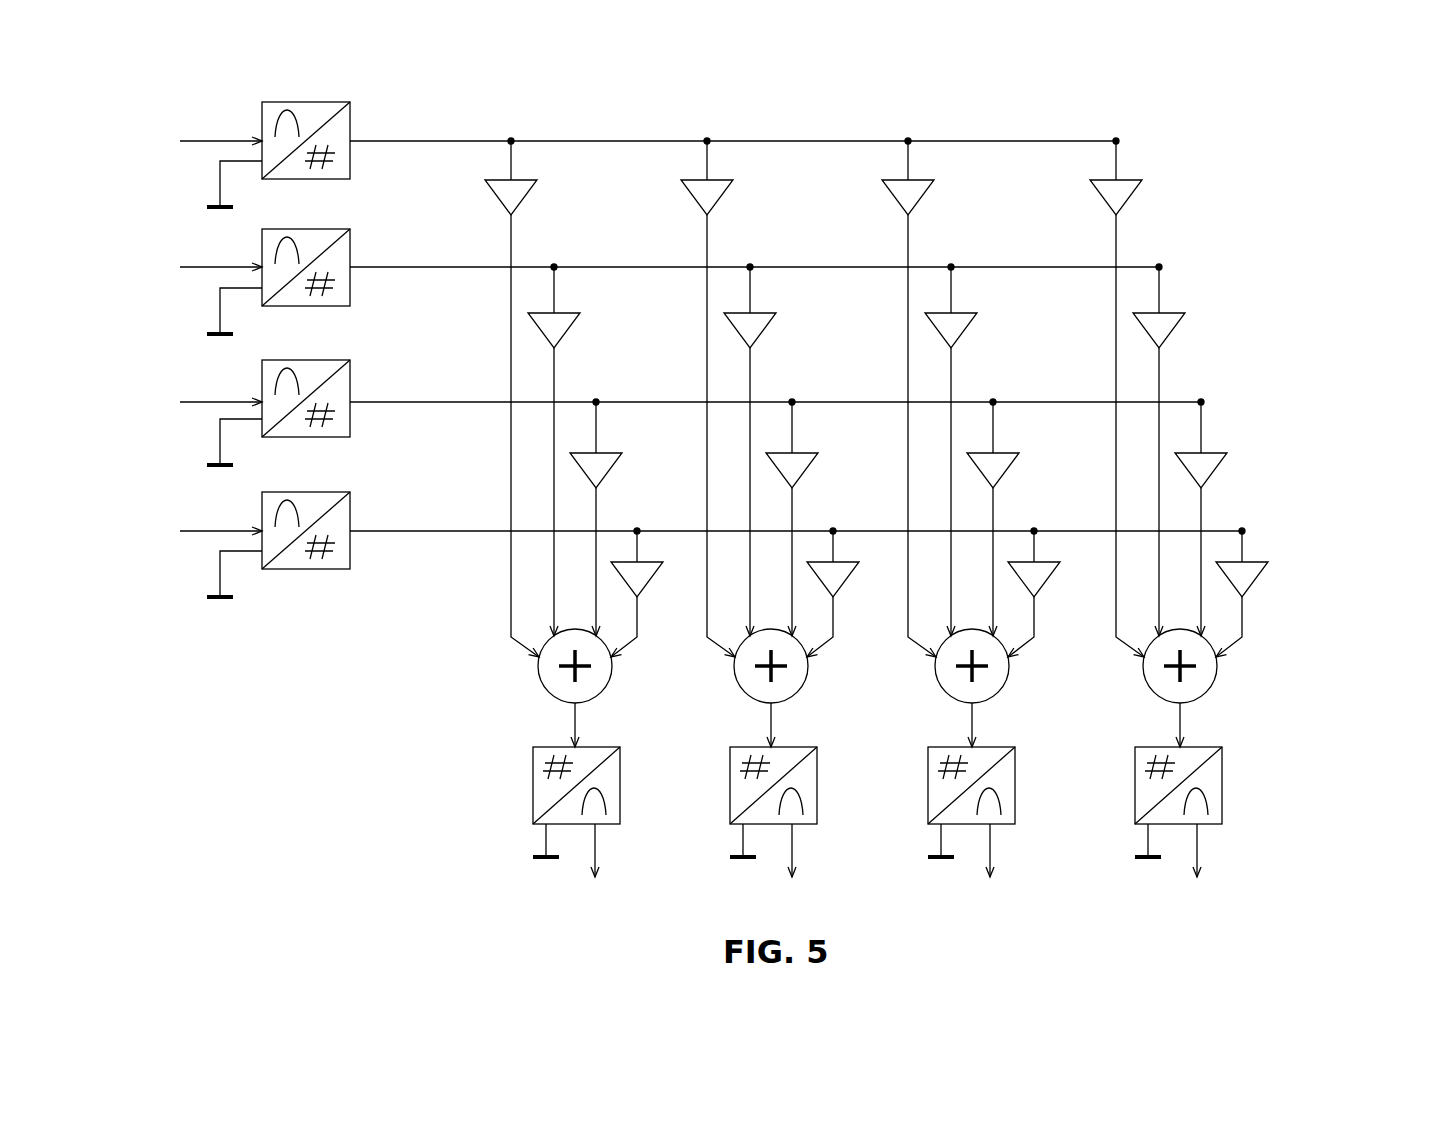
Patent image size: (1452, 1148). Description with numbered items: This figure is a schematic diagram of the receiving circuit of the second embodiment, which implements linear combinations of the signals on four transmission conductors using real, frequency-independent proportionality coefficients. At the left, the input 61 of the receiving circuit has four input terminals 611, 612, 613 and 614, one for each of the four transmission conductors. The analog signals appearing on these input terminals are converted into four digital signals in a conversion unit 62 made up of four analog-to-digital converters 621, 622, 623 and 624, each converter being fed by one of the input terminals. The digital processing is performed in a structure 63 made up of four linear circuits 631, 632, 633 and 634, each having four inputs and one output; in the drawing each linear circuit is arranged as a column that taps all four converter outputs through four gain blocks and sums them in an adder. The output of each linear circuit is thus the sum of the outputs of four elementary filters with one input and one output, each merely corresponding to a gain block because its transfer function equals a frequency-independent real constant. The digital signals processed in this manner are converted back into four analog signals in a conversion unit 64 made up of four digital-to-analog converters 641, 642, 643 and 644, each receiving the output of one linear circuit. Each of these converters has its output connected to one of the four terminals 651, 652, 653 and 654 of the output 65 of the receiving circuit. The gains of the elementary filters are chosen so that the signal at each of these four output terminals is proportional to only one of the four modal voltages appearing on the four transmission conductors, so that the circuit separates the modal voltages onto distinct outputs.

The input 61 is at (205, 400).
The input terminal 611 is at (192, 128).
The input terminal 612 is at (185, 260).
The input terminal 613 is at (183, 393).
The input terminal 614 is at (183, 522).
The conversion unit 62 is at (724, 406).
The analog-to-digital converter 621 is at (358, 110).
The analog-to-digital converter 622 is at (358, 237).
The analog-to-digital converter 623 is at (358, 373).
The analog-to-digital converter 624 is at (358, 503).
The structure 63 is at (937, 402).
The linear circuit 631 is at (552, 125).
The linear circuit 632 is at (752, 125).
The linear circuit 633 is at (945, 125).
The linear circuit 634 is at (1157, 127).
The conversion unit 64 is at (926, 788).
The digital-to-analog converter 641 is at (525, 787).
The digital-to-analog converter 642 is at (722, 787).
The digital-to-analog converter 643 is at (925, 787).
The digital-to-analog converter 644 is at (1125, 793).
The output 65 is at (1007, 850).
The output terminal 651 is at (607, 858).
The output terminal 652 is at (805, 858).
The output terminal 653 is at (1005, 858).
The output terminal 654 is at (1207, 858).